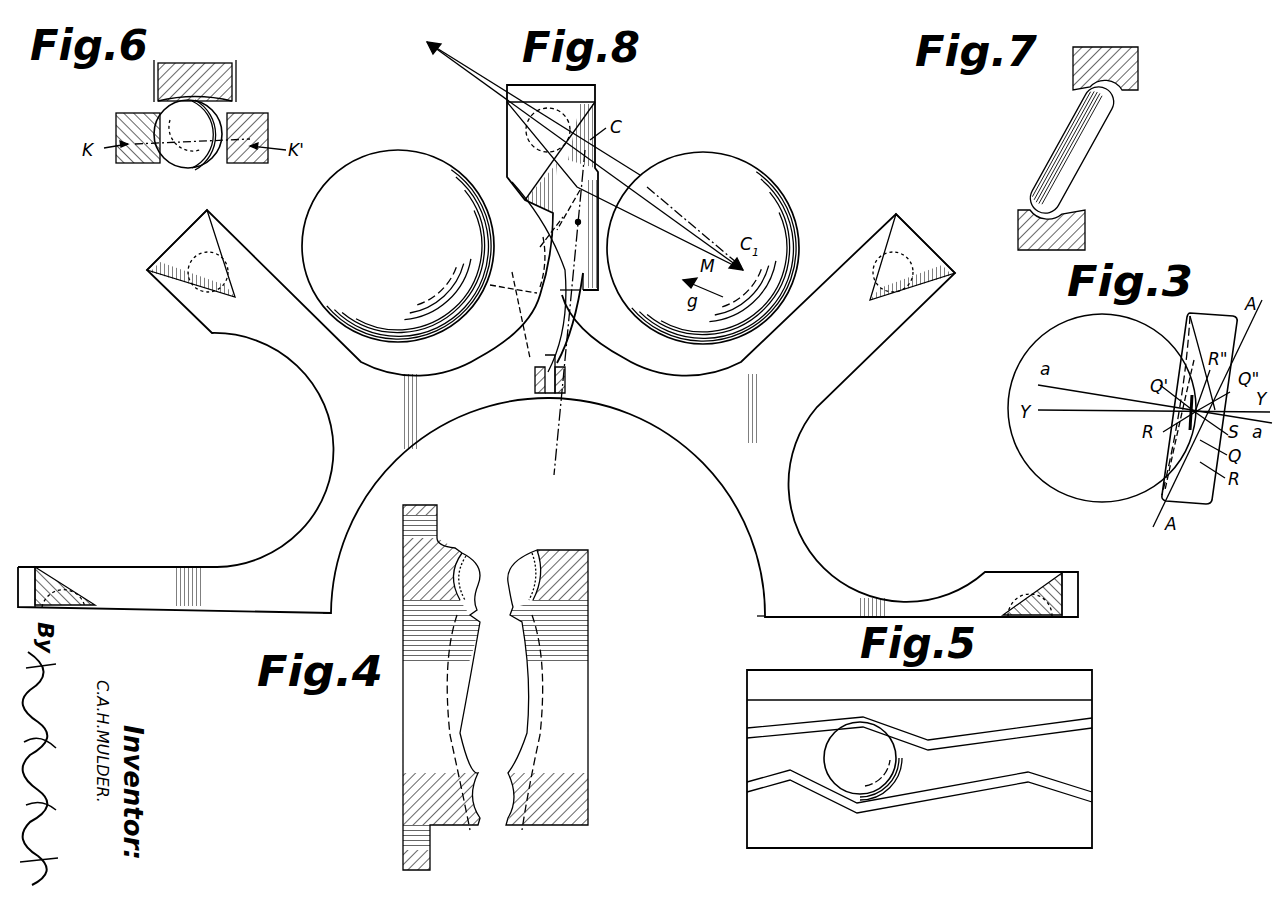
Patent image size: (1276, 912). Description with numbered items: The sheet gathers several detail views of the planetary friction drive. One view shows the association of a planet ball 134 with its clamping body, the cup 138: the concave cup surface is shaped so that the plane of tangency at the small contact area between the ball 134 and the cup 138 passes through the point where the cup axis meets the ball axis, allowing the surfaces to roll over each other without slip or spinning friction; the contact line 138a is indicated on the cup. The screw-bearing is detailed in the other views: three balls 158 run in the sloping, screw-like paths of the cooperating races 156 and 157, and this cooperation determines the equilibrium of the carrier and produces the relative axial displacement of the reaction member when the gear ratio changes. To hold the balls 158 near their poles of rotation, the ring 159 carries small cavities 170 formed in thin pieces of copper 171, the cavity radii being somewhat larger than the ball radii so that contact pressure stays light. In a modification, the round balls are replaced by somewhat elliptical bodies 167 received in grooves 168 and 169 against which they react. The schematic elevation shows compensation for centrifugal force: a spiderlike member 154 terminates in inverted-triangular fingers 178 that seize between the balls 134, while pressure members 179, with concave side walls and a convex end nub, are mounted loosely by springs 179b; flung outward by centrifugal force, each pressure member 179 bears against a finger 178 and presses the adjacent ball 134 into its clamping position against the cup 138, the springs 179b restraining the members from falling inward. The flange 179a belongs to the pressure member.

In FIG. 8, the ball 134 is at (318, 236).
In FIG. 3, the ball 134 is at (1040, 358).
In FIG. 3, the cup 138 is at (1230, 512).
In FIG. 3, the roller contact line 138a is at (1180, 468).
In FIG. 8, the member 154 is at (785, 513).
In FIG. 4, the race 156 is at (405, 572).
In FIG. 5, the race 156 is at (752, 684).
In FIG. 4, the race 157 is at (578, 567).
In FIG. 5, the race 157 is at (752, 818).
In FIG. 6, the ball 158 is at (176, 152).
In FIG. 5, the ball 158 is at (871, 783).
In FIG. 6, the ring 159 is at (202, 85).
In FIG. 7, the elliptical body 167 is at (1098, 137).
In FIG. 7, the groove 168 is at (1125, 62).
In FIG. 7, the groove 169 is at (1040, 226).
In FIG. 6, the cavity 170 is at (233, 68).
In FIG. 6, the thin piece of copper 171 is at (234, 97).
In FIG. 8, the finger 178 is at (597, 103).
In FIG. 8, the pressure member 179 is at (562, 293).
In FIG. 8, the pin flange 179a is at (607, 247).
In FIG. 8, the spring 179b is at (568, 350).